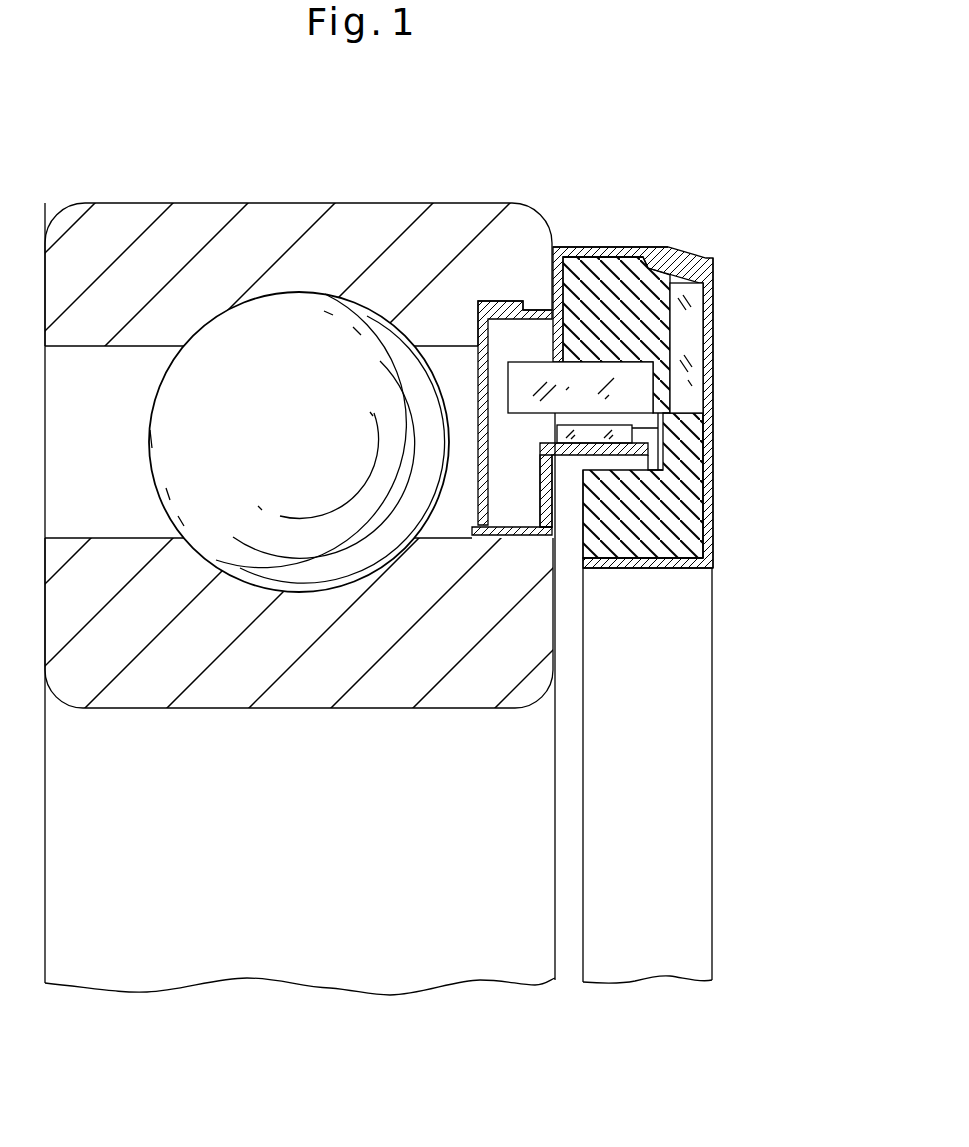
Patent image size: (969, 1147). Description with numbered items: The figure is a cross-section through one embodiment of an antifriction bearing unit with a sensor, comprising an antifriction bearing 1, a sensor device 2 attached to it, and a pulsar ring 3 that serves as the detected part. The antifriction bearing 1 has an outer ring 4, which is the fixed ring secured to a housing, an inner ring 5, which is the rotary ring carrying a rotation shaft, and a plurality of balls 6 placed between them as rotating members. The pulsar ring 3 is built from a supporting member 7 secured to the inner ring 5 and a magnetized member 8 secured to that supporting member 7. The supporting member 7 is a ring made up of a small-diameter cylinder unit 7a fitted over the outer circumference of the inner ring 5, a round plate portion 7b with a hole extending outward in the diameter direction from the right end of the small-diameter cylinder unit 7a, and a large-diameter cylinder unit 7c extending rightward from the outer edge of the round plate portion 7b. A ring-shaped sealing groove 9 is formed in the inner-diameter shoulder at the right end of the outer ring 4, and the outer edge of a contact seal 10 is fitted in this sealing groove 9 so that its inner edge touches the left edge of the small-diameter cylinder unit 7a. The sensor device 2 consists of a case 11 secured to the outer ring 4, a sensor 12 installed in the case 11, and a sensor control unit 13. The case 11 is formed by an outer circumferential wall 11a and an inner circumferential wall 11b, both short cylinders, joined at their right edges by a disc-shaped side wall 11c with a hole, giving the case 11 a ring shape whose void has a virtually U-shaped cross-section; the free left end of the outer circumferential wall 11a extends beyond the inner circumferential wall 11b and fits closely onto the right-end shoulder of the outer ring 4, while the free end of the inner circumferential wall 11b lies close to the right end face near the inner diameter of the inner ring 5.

The antifriction bearing 1 is at (138, 201).
The sensor device 2 is at (727, 291).
The pulsar ring 3 is at (631, 570).
The outer ring 4 is at (308, 202).
The inner ring 5 is at (371, 690).
The balls 6 is at (170, 458).
The supporting member 7 is at (554, 527).
The small-diameter cylinder unit 7a is at (487, 538).
The round plate portion 7b is at (540, 497).
The large-diameter cylinder unit 7c is at (656, 453).
The magnetized member 8 is at (640, 432).
The sealing groove 9 is at (503, 303).
The contact seal 10 is at (473, 326).
The case 11 is at (682, 255).
The outer circumferential wall 11a is at (616, 247).
The inner circumferential wall 11b is at (672, 572).
The side wall 11c is at (713, 316).
The sensor 12 is at (640, 362).
The sensor control unit 13 is at (686, 394).